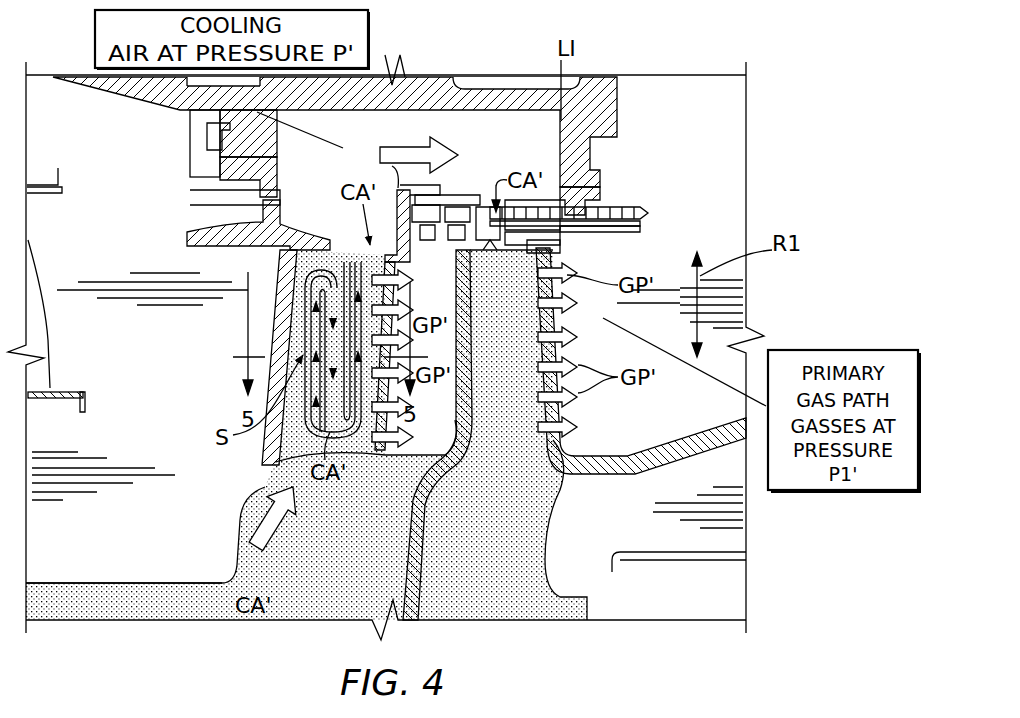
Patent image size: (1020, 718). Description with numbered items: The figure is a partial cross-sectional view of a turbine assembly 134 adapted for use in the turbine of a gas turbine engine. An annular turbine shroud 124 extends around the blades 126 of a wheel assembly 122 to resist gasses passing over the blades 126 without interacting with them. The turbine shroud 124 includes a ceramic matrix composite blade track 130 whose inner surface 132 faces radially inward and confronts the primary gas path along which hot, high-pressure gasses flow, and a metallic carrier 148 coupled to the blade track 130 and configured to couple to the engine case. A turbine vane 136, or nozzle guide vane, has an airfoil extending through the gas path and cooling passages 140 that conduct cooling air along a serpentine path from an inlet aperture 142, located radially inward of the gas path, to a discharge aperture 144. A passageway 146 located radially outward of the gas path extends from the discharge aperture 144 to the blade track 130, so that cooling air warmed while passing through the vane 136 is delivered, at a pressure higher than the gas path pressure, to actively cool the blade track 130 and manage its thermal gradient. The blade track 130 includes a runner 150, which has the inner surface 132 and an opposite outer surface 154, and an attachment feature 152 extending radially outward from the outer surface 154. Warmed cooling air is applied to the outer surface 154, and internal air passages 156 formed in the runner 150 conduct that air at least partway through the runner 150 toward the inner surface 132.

The wheel assembly 122 is at (563, 262).
The annular turbine shroud 124 is at (563, 183).
The blades 126 is at (545, 409).
The ceramic matrix composite blade track 130 is at (685, 205).
The inner surface 132 is at (650, 216).
The turbine assembly 134 is at (527, 33).
The turbine vane 136 is at (285, 453).
The cooling passages 140 is at (298, 292).
The inlet aperture 142 is at (230, 598).
The discharge aperture 144 is at (277, 254).
The passageway 146 is at (475, 133).
The metallic carrier 148 is at (438, 197).
The runner 150 is at (663, 235).
The attachment feature 152 is at (462, 205).
The outer surface 154 is at (555, 195).
The internal air passages 156 is at (486, 248).